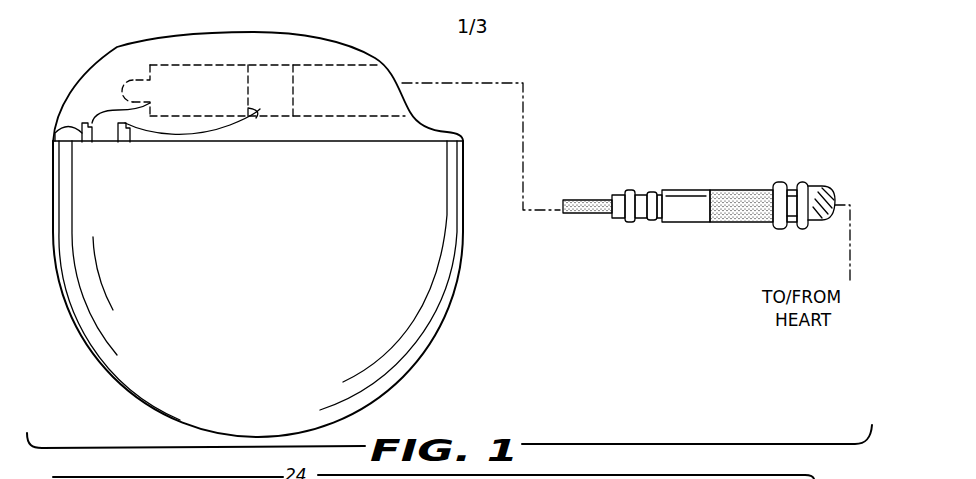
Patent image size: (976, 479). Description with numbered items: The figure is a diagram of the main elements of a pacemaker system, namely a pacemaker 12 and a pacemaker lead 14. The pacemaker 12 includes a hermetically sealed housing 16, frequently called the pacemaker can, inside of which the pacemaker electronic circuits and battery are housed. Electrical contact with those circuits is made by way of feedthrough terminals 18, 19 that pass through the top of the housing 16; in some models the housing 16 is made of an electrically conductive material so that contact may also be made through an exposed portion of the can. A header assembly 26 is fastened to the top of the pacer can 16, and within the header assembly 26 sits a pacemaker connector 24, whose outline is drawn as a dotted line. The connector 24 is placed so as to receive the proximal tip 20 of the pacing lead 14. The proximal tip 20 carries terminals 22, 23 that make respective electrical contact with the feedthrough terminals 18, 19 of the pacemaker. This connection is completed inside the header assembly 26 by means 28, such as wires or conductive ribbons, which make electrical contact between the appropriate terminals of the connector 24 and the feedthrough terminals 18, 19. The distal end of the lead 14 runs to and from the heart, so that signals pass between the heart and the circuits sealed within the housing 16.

The pacemaker 12 is at (78, 284).
The pacemaker lead 14 is at (820, 186).
The hermetically sealed housing 16 is at (265, 281).
The feedthrough terminal 18 is at (55, 136).
The feedthrough terminal 19 is at (128, 142).
The proximal tip 20 is at (699, 194).
The terminal 22 is at (592, 214).
The terminal 23 is at (740, 222).
The pacemaker connector 24 is at (338, 65).
The header assembly 26 is at (150, 40).
The means for making electrical contact 28 is at (110, 112).